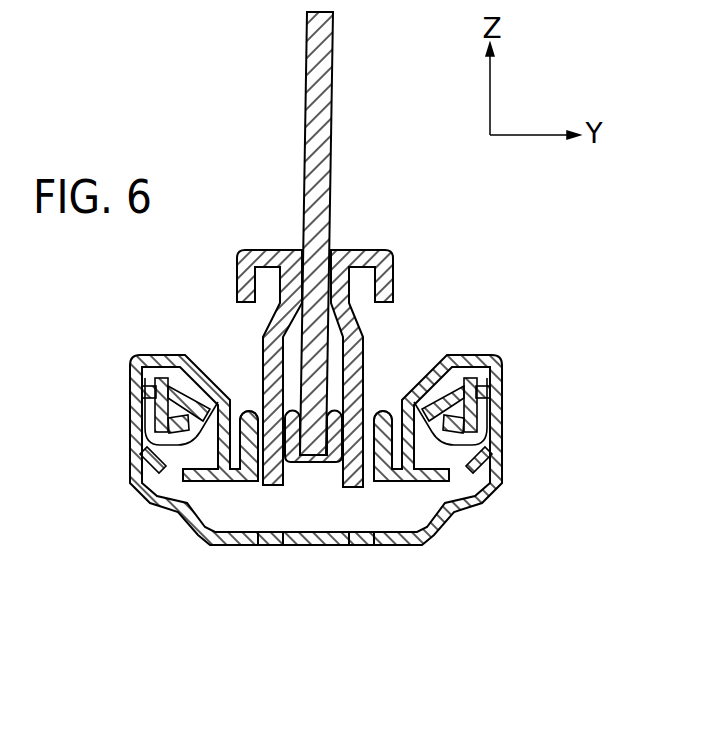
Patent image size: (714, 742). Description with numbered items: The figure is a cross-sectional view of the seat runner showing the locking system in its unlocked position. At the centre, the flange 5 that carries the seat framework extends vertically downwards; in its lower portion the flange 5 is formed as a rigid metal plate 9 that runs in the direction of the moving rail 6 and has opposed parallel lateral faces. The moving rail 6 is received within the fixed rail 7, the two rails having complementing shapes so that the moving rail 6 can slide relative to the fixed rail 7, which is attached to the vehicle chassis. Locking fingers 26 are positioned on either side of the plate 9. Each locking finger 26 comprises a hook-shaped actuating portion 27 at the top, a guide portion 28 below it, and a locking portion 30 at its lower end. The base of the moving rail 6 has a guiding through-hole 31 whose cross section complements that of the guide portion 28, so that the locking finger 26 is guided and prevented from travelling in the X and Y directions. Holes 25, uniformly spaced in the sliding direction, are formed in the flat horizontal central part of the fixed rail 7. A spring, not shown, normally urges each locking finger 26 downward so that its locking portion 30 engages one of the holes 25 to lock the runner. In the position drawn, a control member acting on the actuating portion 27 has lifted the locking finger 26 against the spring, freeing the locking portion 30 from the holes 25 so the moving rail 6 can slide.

The flange 5 is at (256, 53).
The rigid metal plate 9 is at (320, 143).
The locking fingers 26 is at (250, 221).
The actuating portion 27 is at (275, 265).
The guide portion 28 is at (263, 377).
The locking portion 30 is at (267, 486).
The fixed rail 7 is at (326, 573).
The moving rail 6 is at (391, 374).
The guiding through-hole 31 is at (257, 407).
The holes 25 is at (272, 540).